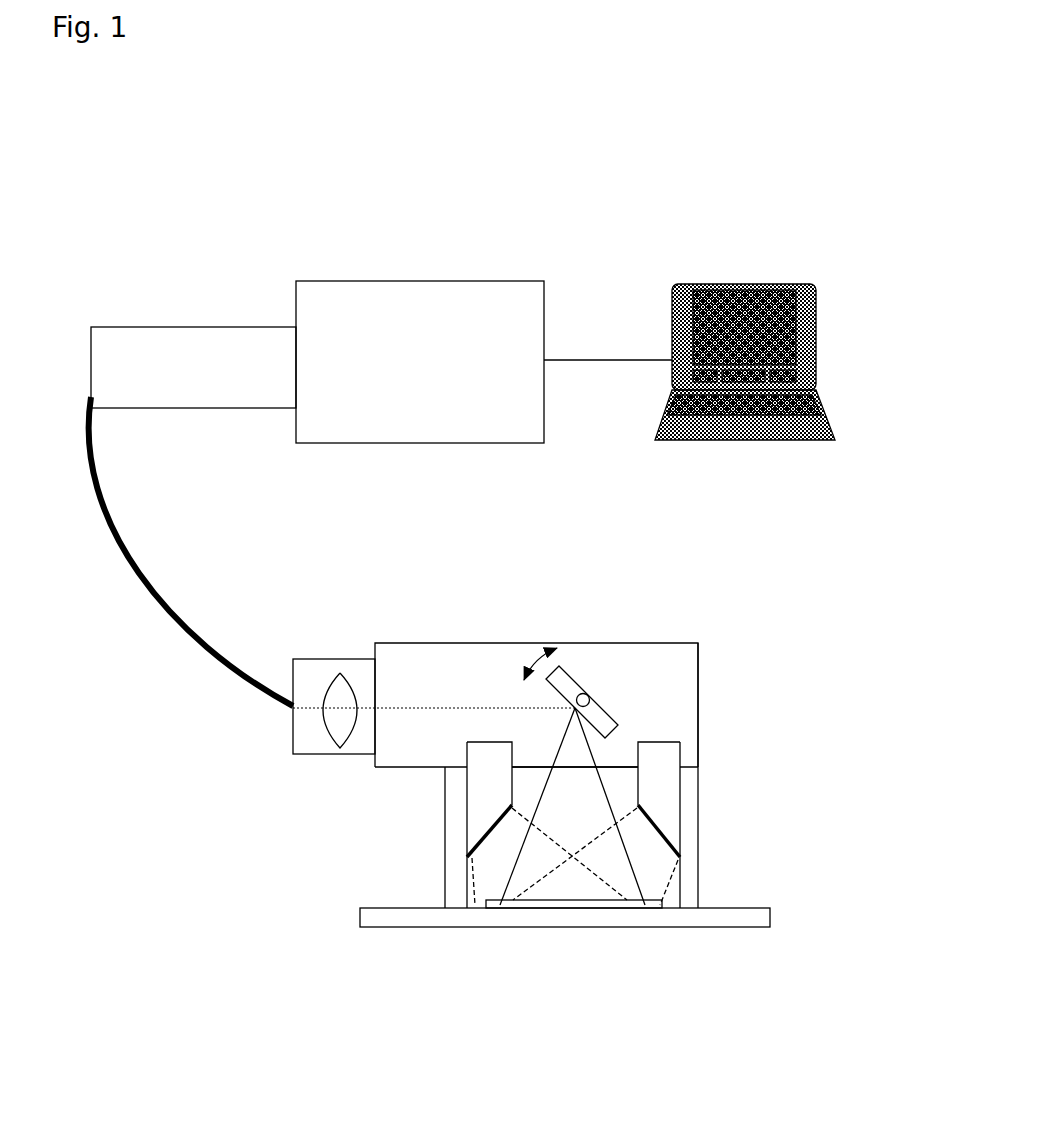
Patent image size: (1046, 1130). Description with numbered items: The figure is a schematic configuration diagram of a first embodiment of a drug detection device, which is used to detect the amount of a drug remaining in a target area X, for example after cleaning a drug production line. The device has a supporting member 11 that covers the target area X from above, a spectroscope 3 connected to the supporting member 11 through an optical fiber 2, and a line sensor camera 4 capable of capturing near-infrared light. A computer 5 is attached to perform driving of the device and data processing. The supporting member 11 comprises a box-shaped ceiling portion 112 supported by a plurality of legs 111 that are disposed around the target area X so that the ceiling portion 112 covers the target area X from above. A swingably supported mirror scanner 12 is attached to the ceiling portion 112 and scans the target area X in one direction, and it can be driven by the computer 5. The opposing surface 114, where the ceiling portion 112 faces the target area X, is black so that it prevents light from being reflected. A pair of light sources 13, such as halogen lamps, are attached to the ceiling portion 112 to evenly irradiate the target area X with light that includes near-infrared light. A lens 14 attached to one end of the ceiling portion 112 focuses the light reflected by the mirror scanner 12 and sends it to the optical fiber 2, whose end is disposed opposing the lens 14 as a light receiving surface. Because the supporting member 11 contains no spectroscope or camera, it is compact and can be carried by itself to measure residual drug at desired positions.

The optical fiber 2 is at (128, 578).
The spectroscope 3 is at (172, 353).
The line sensor camera 4 is at (399, 300).
The computer 5 is at (752, 297).
The supporting member 11 is at (530, 798).
The mirror scanner 12 is at (567, 678).
The light sources 13 is at (483, 795).
The lens 14 is at (340, 696).
The legs 111 is at (697, 877).
The ceiling portion 112 is at (665, 650).
The opposing surface 114 is at (532, 768).
The target area X is at (585, 900).